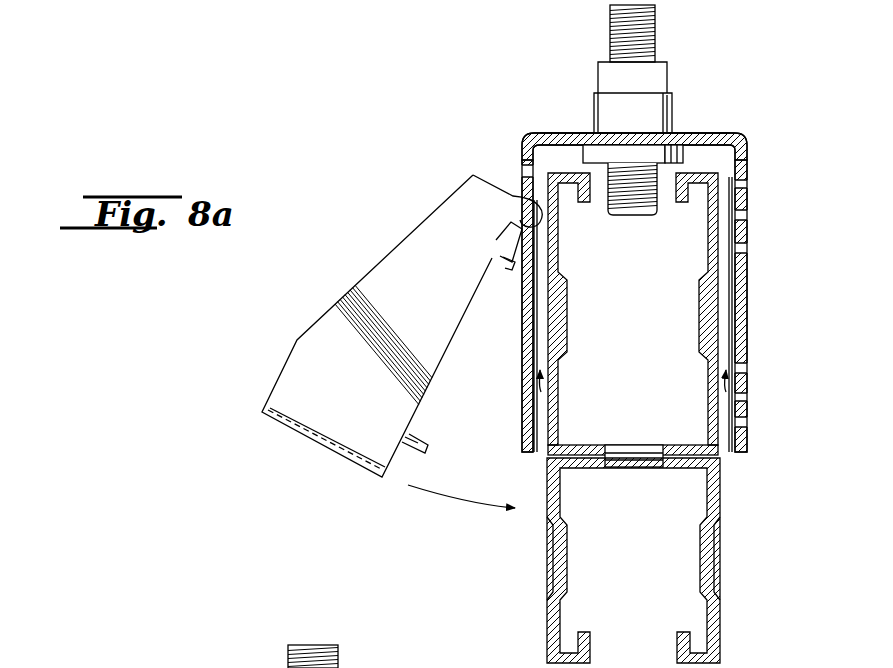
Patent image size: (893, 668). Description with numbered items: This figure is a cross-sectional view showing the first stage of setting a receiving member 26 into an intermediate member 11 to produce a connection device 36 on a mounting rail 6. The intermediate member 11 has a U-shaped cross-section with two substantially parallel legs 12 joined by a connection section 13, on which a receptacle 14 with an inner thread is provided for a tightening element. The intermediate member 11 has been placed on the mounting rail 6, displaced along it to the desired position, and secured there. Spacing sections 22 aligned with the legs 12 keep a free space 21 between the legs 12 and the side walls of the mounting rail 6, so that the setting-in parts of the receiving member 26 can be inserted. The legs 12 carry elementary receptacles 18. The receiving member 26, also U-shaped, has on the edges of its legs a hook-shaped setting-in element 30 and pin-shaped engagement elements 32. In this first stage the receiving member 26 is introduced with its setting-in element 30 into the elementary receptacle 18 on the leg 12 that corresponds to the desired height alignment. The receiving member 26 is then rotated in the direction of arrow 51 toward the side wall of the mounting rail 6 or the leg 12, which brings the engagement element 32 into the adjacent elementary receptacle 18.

The connection device 36 is at (432, 97).
The receptacle 14 is at (595, 77).
The connection section 13 is at (570, 134).
The intermediate member 11 is at (752, 151).
The setting-in element 30 is at (522, 207).
The receiving member 26 is at (343, 301).
The elementary receptacle 18 is at (743, 253).
The spacing section 22 is at (728, 290).
The leg 12 is at (674, 317).
The engagement element 32 is at (508, 270).
The free space 21 is at (540, 393).
The arrow 51 is at (457, 503).
The mounting rail 6 is at (722, 560).